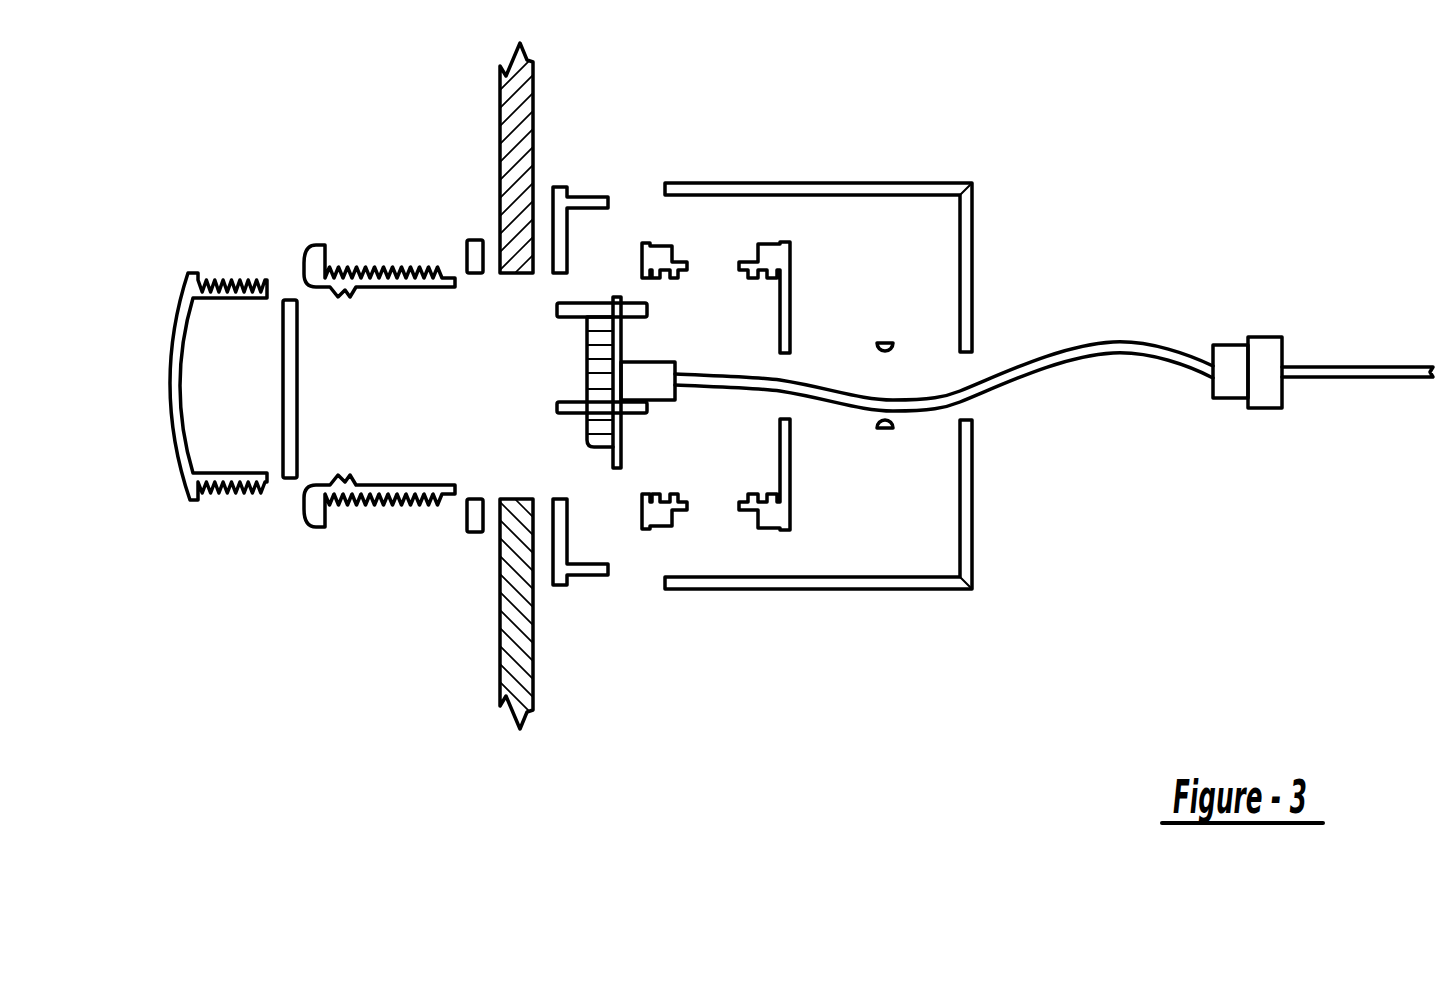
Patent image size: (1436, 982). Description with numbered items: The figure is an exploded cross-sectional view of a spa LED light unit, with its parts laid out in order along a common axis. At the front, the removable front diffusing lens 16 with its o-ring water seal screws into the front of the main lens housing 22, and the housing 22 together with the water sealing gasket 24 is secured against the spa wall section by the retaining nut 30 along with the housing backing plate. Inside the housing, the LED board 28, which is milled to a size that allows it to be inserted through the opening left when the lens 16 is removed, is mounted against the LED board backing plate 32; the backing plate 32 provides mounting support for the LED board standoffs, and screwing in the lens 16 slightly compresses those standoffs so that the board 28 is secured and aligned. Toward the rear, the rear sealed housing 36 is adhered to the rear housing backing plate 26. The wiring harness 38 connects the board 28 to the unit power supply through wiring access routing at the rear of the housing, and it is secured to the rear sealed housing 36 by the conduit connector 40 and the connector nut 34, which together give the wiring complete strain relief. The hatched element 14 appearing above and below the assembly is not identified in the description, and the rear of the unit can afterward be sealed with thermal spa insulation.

The sensor housing rod 14 is at (500, 638).
The front diffusing lens 16 is at (227, 497).
The main lens housing 22 is at (352, 522).
The water sealing gasket 24 is at (475, 535).
The rear housing backing plate 26 is at (585, 595).
The LED board 28 is at (617, 480).
The retaining nut 30 is at (660, 535).
The LED board backing plate 32 is at (781, 542).
The connector nut 34 is at (886, 437).
The rear sealed housing 36 is at (970, 592).
The wiring harness 38 is at (1045, 370).
The conduit connector 40 is at (1263, 410).